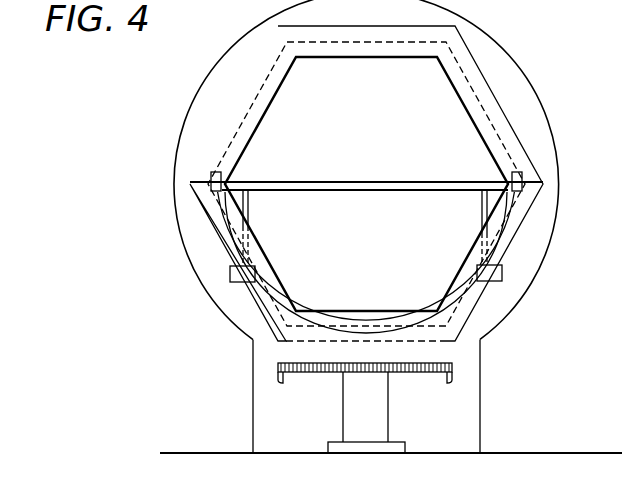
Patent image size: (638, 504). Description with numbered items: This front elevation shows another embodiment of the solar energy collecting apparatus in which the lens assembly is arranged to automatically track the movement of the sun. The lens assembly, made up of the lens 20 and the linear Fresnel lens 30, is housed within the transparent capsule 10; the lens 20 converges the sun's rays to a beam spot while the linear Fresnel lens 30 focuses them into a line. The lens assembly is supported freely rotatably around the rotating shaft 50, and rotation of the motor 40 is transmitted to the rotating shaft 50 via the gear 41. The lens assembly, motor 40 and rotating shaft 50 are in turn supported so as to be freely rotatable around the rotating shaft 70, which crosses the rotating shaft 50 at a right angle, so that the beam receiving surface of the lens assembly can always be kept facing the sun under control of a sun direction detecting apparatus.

The transparent capsule 10 is at (483, 30).
The lens 20 is at (330, 68).
The linear Fresnel lens 30 is at (373, 42).
The motor 40 is at (230, 273).
The gear 41 is at (249, 207).
The rotating shaft 50 is at (375, 181).
The rotating shaft 70 is at (389, 411).